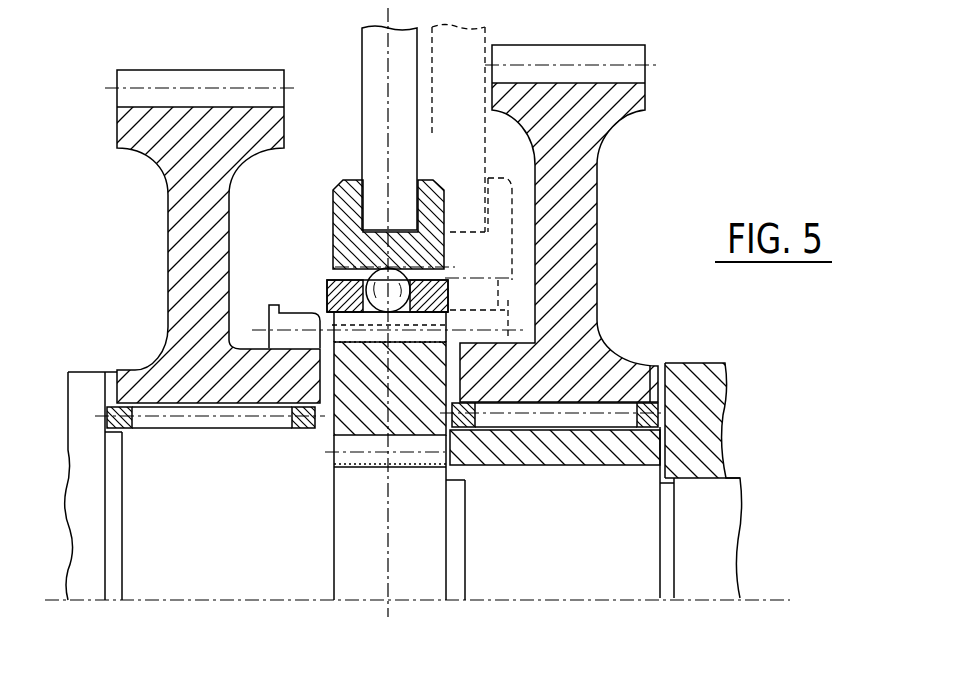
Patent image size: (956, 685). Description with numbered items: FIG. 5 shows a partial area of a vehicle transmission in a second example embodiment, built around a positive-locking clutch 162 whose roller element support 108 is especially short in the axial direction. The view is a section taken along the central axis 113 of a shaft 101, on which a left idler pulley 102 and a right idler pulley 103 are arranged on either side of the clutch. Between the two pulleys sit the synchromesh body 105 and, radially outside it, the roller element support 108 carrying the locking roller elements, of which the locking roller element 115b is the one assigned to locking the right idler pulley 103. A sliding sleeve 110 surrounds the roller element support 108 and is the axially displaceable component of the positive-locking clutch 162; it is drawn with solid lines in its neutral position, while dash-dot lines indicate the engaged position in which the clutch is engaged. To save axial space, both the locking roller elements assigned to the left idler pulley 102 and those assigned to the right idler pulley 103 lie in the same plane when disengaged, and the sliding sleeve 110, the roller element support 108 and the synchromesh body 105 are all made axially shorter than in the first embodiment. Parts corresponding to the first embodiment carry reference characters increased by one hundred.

The shaft 101 is at (446, 553).
The left idler pulley 102 is at (184, 235).
The right idler pulley 103 is at (578, 217).
The synchromesh body 105 is at (372, 405).
The roller element support 108 is at (331, 278).
The sliding sleeve 110 is at (427, 200).
The axis of rotation 113 is at (63, 601).
The locking roller element 115b is at (407, 313).
The positive-locking clutch 162 is at (310, 58).